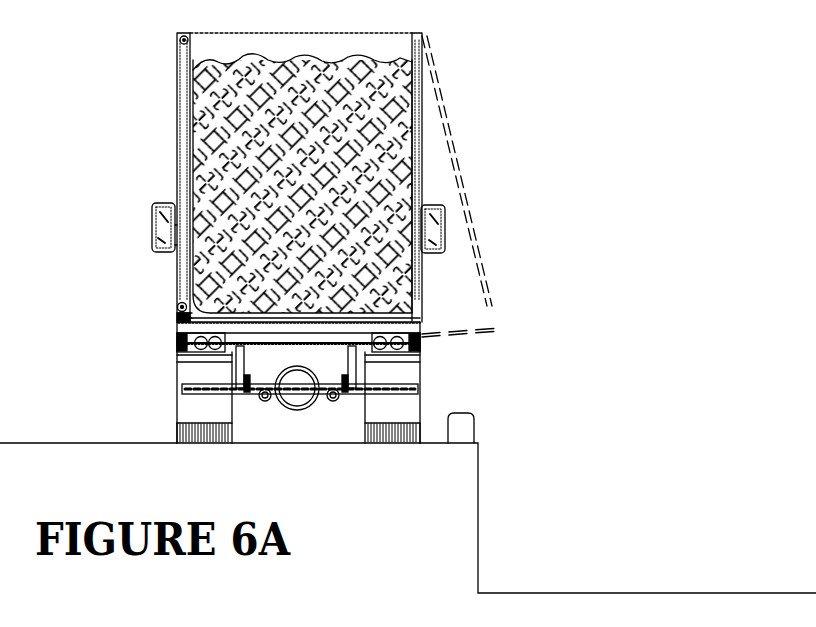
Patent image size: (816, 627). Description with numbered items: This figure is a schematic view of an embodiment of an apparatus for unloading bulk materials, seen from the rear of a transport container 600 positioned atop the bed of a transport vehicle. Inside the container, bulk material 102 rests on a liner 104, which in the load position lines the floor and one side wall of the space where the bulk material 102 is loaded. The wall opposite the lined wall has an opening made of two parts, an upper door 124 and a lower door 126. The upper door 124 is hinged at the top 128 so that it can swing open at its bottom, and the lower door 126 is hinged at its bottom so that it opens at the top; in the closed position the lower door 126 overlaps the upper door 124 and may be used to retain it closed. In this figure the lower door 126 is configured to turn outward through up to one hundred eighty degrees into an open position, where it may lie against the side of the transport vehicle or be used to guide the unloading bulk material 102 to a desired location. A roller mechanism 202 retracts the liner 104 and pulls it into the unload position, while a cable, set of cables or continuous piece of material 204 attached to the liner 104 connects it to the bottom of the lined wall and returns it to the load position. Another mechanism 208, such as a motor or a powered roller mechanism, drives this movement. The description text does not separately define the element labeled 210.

The bulk material 102 is at (393, 178).
The liner 104 is at (351, 301).
The upper door 124 is at (454, 102).
The lower door 126 is at (426, 313).
The top 128 is at (426, 36).
The roller mechanism 202 is at (177, 38).
The cable, set of cables or continuous piece of material 204 is at (186, 320).
The another mechanism 208 is at (175, 306).
The mesh tarp 210 is at (274, 302).
The transport container 600 is at (169, 250).